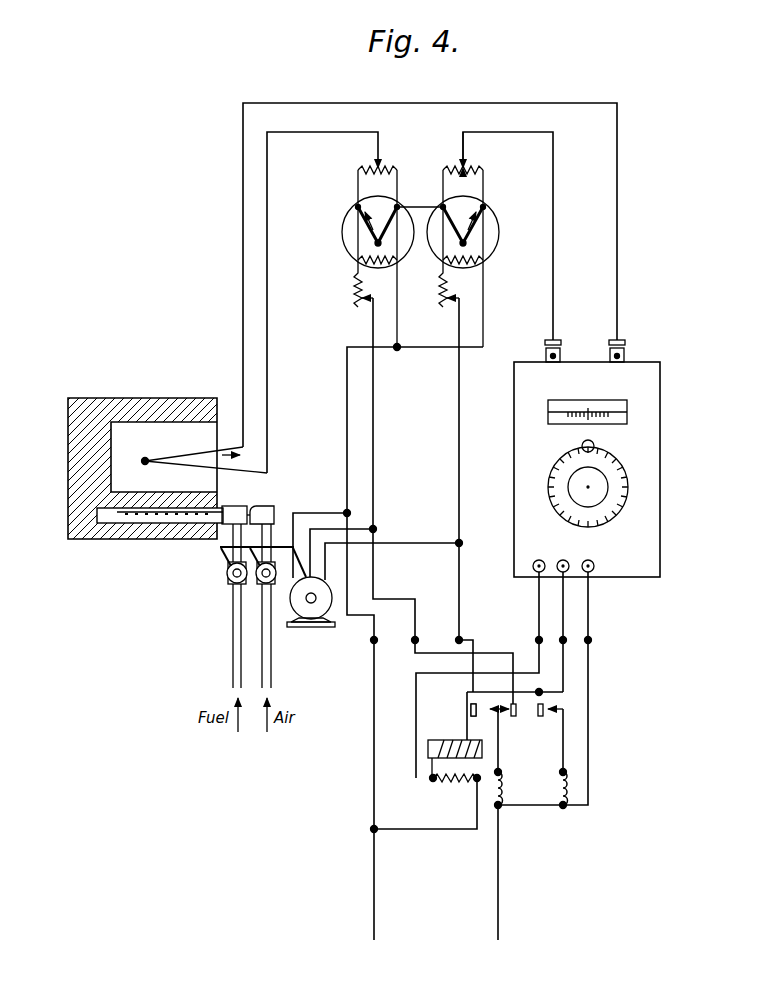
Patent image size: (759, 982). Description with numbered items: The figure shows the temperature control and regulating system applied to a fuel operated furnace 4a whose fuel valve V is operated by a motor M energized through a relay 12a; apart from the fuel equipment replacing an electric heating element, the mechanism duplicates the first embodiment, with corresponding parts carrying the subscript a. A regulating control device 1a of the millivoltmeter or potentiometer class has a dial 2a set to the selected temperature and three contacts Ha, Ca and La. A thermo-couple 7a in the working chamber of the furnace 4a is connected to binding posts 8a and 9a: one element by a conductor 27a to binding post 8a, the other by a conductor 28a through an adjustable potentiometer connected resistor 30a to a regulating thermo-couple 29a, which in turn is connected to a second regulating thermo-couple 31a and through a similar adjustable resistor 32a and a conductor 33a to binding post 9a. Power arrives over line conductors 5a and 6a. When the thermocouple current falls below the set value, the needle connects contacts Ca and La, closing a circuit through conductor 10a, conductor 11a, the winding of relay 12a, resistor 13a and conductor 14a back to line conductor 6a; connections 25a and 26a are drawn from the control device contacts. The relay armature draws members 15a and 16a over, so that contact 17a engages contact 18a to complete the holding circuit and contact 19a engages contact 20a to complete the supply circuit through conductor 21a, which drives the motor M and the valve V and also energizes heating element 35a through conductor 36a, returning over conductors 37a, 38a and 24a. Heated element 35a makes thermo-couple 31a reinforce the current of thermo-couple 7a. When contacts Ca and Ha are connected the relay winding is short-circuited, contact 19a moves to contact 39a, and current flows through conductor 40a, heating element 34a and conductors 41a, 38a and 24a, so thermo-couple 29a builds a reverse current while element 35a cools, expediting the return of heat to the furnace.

The regulating control device 1a is at (668, 447).
The dial 2a is at (552, 469).
The fuel furnace 4a is at (56, 473).
The line conductor 5a is at (499, 876).
The line conductor 6a is at (373, 875).
The thermo-couple 7a is at (163, 447).
The binding post 8a is at (624, 343).
The binding post 9a is at (546, 345).
The conductor 10a is at (590, 795).
The conductor 11a is at (471, 704).
The relay 12a is at (426, 748).
The resistor 13a is at (452, 783).
The conductor 14a is at (431, 832).
The armature member 15a is at (501, 764).
The armature member 16a is at (566, 752).
The contact 17a is at (556, 706).
The contact 18a is at (546, 717).
The contact 19a is at (496, 708).
The contact 20a is at (471, 714).
The conductor 21a is at (476, 646).
The conductor 24a is at (372, 792).
The conductor 25a is at (589, 628).
The conductor 26a is at (538, 616).
The conductor 27a is at (617, 242).
The conductor 28a is at (267, 358).
The regulating thermo-couple 29a is at (356, 224).
The adjustable resistor 30a is at (376, 169).
The regulating thermo-couple 31a is at (486, 222).
The adjustable resistor 32a is at (465, 170).
The conductor 33a is at (553, 178).
The heating element 34a is at (375, 261).
The heating element 35a is at (464, 260).
The conductor 36a is at (459, 438).
The conductor 37a is at (433, 349).
The conductor 38a is at (352, 581).
The contact 39a is at (513, 717).
The conductor 40a is at (427, 657).
The conductor 41a is at (400, 303).
The contact H Ha is at (539, 556).
The contact C Ca is at (564, 556).
The contact L La is at (588, 556).
The fuel valve V is at (260, 586).
The motor M is at (313, 614).